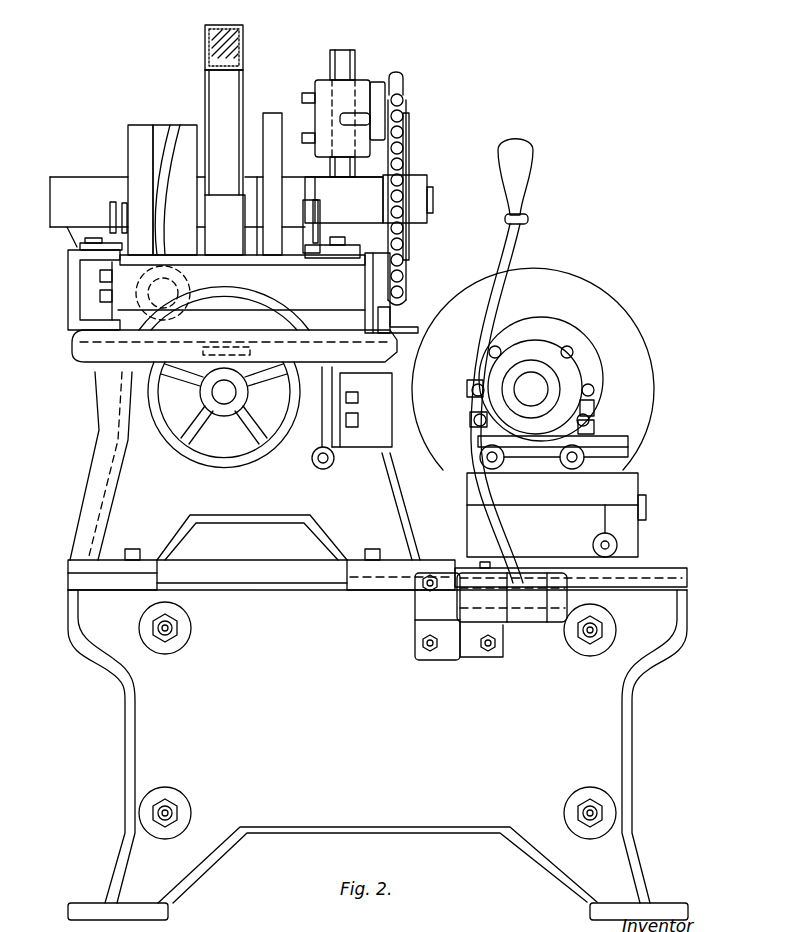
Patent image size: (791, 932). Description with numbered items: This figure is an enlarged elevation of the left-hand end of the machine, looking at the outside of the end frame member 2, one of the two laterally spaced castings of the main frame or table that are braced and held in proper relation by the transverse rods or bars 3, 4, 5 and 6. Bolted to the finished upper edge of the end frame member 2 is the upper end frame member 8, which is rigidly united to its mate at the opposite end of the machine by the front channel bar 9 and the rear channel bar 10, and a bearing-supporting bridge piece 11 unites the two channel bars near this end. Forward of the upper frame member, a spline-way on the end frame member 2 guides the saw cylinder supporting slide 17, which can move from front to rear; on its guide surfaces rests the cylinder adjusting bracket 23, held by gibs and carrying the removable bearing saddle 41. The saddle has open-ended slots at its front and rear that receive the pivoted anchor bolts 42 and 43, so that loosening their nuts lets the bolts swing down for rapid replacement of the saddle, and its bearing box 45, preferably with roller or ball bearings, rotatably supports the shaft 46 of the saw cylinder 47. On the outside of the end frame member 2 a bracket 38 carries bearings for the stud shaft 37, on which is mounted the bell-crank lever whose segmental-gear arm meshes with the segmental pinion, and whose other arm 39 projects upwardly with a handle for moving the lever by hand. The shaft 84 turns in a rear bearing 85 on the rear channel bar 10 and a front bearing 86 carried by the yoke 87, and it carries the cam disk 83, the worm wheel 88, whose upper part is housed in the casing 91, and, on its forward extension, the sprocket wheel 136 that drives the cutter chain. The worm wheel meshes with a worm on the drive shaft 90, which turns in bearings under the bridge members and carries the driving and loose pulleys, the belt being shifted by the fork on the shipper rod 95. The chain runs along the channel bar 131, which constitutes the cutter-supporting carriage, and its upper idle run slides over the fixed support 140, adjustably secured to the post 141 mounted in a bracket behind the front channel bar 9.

The end frame member 2 is at (157, 712).
The transverse rod 3 is at (590, 627).
The transverse rod 4 is at (587, 817).
The transverse rod 5 is at (177, 627).
The transverse rod 6 is at (173, 817).
The upper end frame member 8 is at (133, 480).
The front channel bar 9 is at (352, 380).
The rear channel bar 10 is at (112, 302).
The bridge piece 11 is at (100, 353).
The saw cylinder supporting slide 17 is at (630, 533).
The cylinder adjusting bracket 23 is at (627, 450).
The stud shaft 37 is at (457, 603).
The bracket 38 is at (445, 650).
The bell-crank lever arm 39 is at (518, 250).
The bearing saddle 41 is at (548, 430).
The anchor bolt 42 is at (593, 430).
The anchor bolt 43 is at (480, 420).
The bearing box 45 is at (533, 387).
The saw cylinder shaft 46 is at (531, 389).
The saw cylinder 47 is at (597, 258).
The cam disk 83 is at (272, 117).
The shaft 84 is at (432, 200).
The rear bearing 85 is at (90, 187).
The front bearing 86 is at (343, 217).
The yoke 87 is at (237, 260).
The worm wheel 88 is at (213, 46).
The drive shaft 90 is at (220, 390).
The casing 91 is at (225, 162).
The shipper rod 95 is at (320, 463).
The channel bar 131 is at (377, 313).
The sprocket wheel 136 is at (410, 150).
The fixed support 140 is at (398, 77).
The post 141 is at (342, 57).